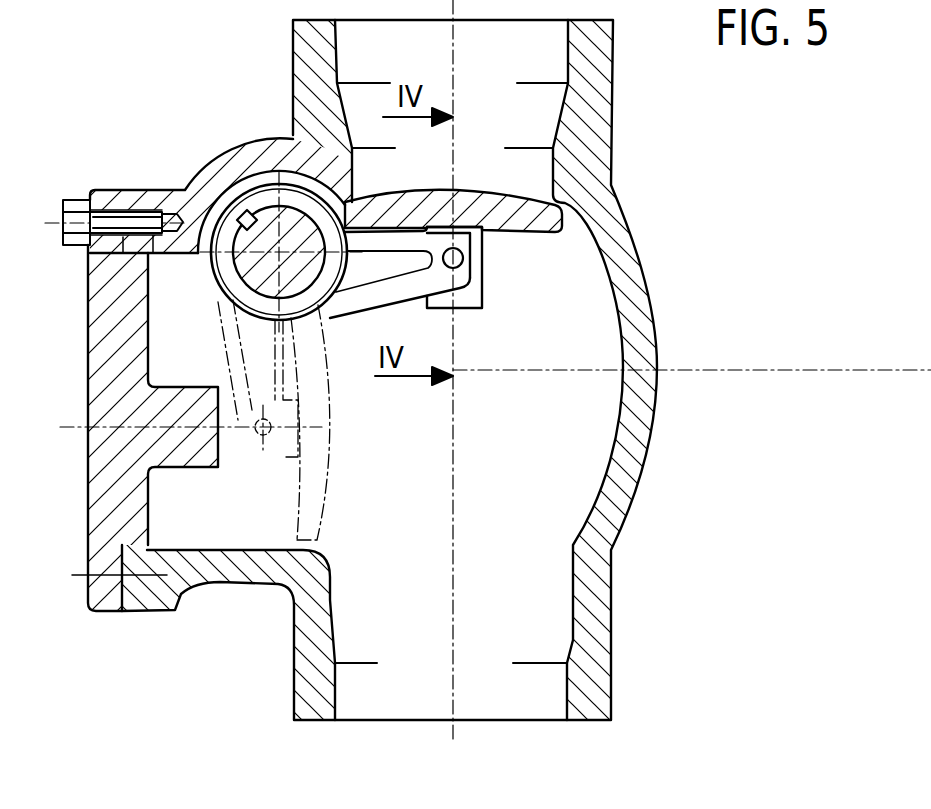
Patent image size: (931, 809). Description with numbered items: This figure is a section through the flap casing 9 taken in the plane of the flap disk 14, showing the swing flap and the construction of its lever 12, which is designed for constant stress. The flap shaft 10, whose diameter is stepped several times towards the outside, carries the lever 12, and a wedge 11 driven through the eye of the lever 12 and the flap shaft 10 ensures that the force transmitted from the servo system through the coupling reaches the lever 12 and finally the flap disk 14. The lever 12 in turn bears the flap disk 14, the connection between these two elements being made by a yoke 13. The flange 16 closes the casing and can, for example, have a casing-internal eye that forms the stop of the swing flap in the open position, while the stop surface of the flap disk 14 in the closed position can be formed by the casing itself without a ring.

The flap casing 9 is at (633, 318).
The flap shaft 10 is at (268, 266).
The wedge 11 is at (246, 212).
The lever 12 is at (380, 306).
The yoke 13 is at (463, 259).
The flap disk 14 is at (563, 218).
The flange 16 is at (93, 605).